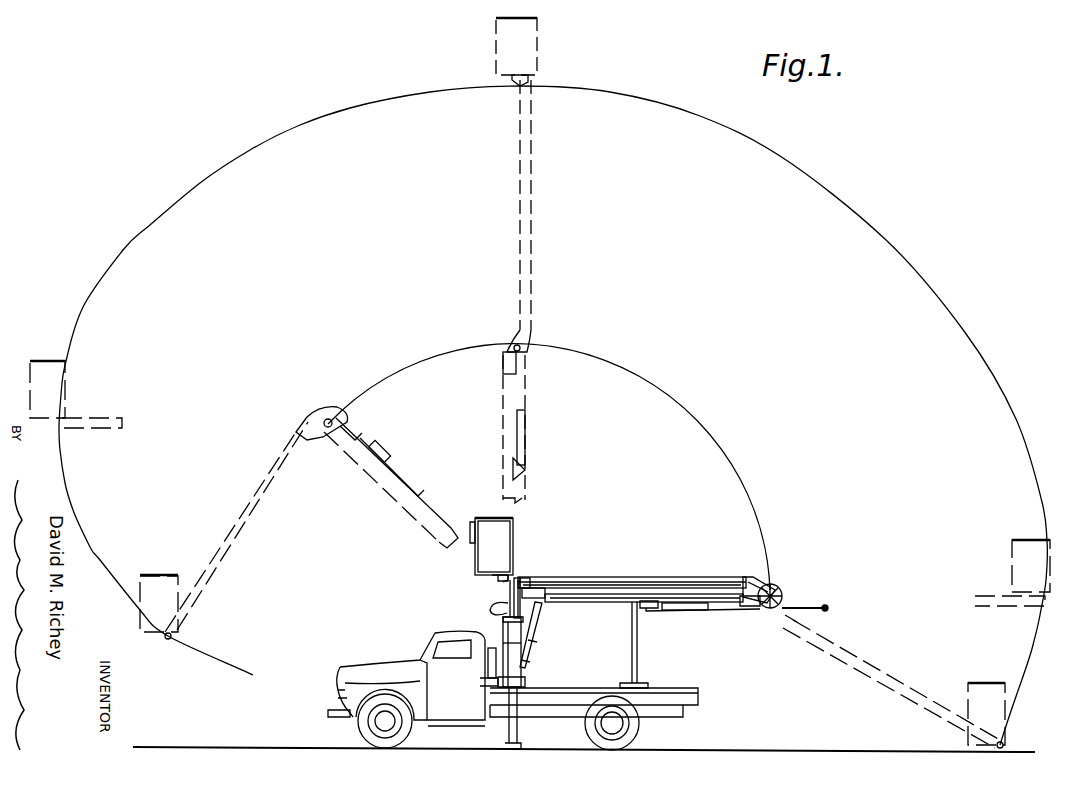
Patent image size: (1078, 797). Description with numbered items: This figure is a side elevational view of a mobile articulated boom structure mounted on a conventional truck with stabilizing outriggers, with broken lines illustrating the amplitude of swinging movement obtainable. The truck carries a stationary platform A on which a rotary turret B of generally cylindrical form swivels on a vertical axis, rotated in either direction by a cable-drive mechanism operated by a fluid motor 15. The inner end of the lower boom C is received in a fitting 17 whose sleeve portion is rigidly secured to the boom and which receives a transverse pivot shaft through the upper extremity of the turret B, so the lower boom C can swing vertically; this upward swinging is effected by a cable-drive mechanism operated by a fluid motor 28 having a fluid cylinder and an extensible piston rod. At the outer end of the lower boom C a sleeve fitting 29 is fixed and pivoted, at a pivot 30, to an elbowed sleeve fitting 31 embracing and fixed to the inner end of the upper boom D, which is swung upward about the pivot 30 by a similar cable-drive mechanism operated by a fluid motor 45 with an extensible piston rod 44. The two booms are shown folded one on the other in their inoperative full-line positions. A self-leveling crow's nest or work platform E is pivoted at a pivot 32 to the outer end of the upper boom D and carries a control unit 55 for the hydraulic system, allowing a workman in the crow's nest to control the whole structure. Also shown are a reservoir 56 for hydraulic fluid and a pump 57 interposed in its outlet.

The stationary platform A is at (572, 690).
The rotary turret B is at (503, 632).
The lower boom C is at (592, 600).
The upper boom D is at (615, 577).
The crow's nest or work platform E is at (484, 558).
The fluid motor 15 is at (512, 592).
The fitting 17 is at (530, 600).
The fluid motor 28 is at (540, 638).
The sleeve fitting 29 is at (752, 607).
The pivot 30 is at (780, 589).
The elbowed sleeve fitting 31 is at (757, 576).
The pivot 32 is at (521, 577).
The piston rod 44 is at (735, 611).
The fluid motor 45 is at (668, 612).
The control unit 55 is at (470, 534).
The reservoir 56 is at (489, 660).
The pump 57 is at (492, 682).